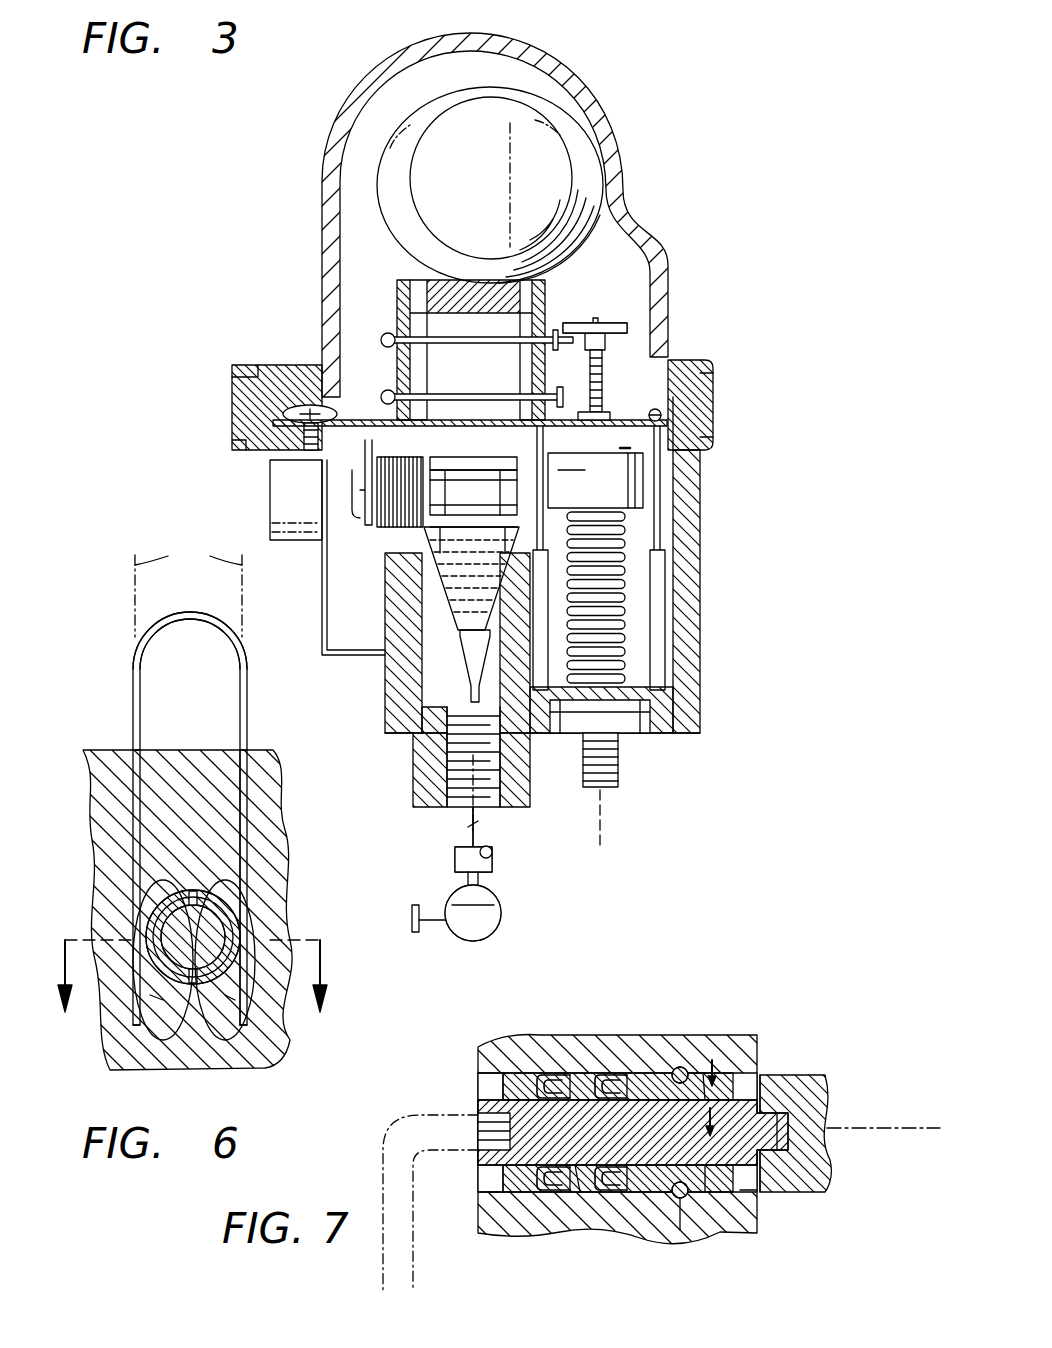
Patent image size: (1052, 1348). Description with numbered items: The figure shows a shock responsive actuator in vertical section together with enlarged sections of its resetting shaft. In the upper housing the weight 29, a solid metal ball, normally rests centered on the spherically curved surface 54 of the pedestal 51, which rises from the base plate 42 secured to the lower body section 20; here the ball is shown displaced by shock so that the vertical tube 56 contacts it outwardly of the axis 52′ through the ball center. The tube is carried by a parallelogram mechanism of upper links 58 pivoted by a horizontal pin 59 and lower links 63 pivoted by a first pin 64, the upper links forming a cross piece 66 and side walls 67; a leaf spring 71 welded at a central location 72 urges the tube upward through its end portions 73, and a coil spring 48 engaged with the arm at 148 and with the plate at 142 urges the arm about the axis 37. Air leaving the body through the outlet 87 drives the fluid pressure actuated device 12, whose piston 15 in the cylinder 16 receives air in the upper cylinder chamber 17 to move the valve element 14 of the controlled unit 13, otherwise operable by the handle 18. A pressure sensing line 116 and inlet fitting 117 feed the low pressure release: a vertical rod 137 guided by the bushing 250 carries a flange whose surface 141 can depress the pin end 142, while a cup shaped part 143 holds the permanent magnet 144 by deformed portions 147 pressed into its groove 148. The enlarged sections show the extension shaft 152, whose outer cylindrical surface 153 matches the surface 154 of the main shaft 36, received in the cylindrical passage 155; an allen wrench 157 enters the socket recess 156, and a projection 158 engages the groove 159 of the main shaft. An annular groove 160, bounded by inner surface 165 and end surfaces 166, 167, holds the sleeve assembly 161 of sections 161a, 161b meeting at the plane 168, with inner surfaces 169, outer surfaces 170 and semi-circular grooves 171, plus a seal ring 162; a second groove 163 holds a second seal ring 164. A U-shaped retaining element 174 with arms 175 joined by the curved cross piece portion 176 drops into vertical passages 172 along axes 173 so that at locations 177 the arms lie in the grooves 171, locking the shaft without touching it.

In FIG. 3, the fluid pressure actuated device 12 is at (496, 880).
In FIG. 3, the controlled unit 13 is at (502, 914).
In FIG. 3, the valve element 14 is at (466, 900).
In FIG. 3, the piston 15 is at (455, 862).
In FIG. 3, the cylinder 16 is at (488, 848).
In FIG. 3, the upper cylinder chamber 17 is at (468, 840).
In FIG. 3, the operating handle 18 is at (416, 932).
In FIG. 6, the lower body section 20 is at (272, 792).
In FIG. 7, the lower body section 20 is at (490, 1237).
In FIG. 3, the weight 29 is at (378, 152).
In FIG. 7, the main shaft 36 is at (822, 1093).
In FIG. 7, the axis 37 is at (895, 1130).
In FIG. 3, the base plate 42 is at (300, 418).
In FIG. 3, the coil spring 48 is at (372, 518).
In FIG. 3, the pedestal 51 is at (425, 292).
In FIG. 3, the vertical axis of the ball 52′ is at (508, 163).
In FIG. 3, the spherically curved surface 54 is at (440, 290).
In FIG. 3, the vertical tube 56 is at (540, 340).
In FIG. 3, the upper links 58 is at (384, 335).
In FIG. 3, the horizontal pin 59 is at (522, 345).
In FIG. 3, the lower links 63 is at (386, 392).
In FIG. 3, the first pin 64 is at (500, 394).
In FIG. 3, the cross piece 66 is at (455, 588).
In FIG. 3, the vertical side walls 67 is at (478, 650).
In FIG. 3, the leaf spring 71 is at (432, 430).
In FIG. 3, the central location 72 is at (463, 430).
In FIG. 3, the end portions 73 is at (400, 477).
In FIG. 3, the outlet 87 is at (492, 772).
In FIG. 3, the line 116 is at (605, 822).
In FIG. 3, the inlet fitting 117 is at (619, 763).
In FIG. 3, the vertical rod 137 is at (602, 380).
In FIG. 3, the downwardly facing horizontal surface 141 is at (627, 327).
In FIG. 3, the end portion of pin 142 is at (352, 440).
In FIG. 3, the cup shaped part 143 is at (628, 492).
In FIG. 3, the permanent magnet 144 is at (642, 447).
In FIG. 3, the localized portions of cup side wall 147 is at (595, 480).
In FIG. 3, the groove in magnet 148 is at (565, 450).
In FIG. 6, the extension shaft 152 is at (207, 905).
In FIG. 7, the extension shaft 152 is at (722, 1040).
In FIG. 7, the outer cylindrical surface 153 is at (515, 1052).
In FIG. 7, the outer cylindrical surface of main shaft 154 is at (795, 1070).
In FIG. 6, the cylindrical passage 155 is at (137, 1030).
In FIG. 7, the cylindrical passage 155 is at (503, 1185).
In FIG. 7, the allen wrench socket recess 156 is at (478, 1115).
In FIG. 7, the allen wrench 157 is at (380, 1160).
In FIG. 7, the diametrically extending projection 158 is at (780, 1112).
In FIG. 7, the diametrical groove 159 is at (778, 1165).
In FIG. 7, the annular groove 160 is at (648, 1073).
In FIG. 7, the sleeve assembly 161 is at (706, 1073).
In FIG. 6, the sleeve section 161a is at (165, 913).
In FIG. 6, the sleeve section 161b is at (238, 880).
In FIG. 7, the seal ring 162 is at (614, 1073).
In FIG. 7, the second groove 163 is at (568, 1073).
In FIG. 7, the second seal ring 164 is at (528, 1073).
In FIG. 6, the inner cylindrical surface 165 is at (160, 1010).
In FIG. 7, the inner cylindrical surface 165 is at (688, 1200).
In FIG. 7, the annular end surface 166 is at (585, 1195).
In FIG. 7, the annular end surface 167 is at (735, 1200).
In FIG. 6, the diametrical plane 168 is at (226, 1010).
In FIG. 6, the inner cylindrical surfaces 169 is at (225, 800).
In FIG. 7, the outer cylindrical surfaces 170 is at (742, 1050).
In FIG. 6, the semi-circular grooves 171 is at (185, 890).
In FIG. 7, the semi-circular grooves 171 is at (682, 1068).
In FIG. 6, the vertical passages 172 is at (250, 772).
In FIG. 7, the vertical passages 172 is at (698, 1070).
In FIG. 6, the vertical axes 173 is at (188, 586).
In FIG. 6, the U-shaped retaining element 174 is at (130, 645).
In FIG. 6, the arms 175 is at (132, 705).
In FIG. 6, the curved cross piece portion 176 is at (218, 625).
In FIG. 6, the locations 177 is at (100, 940).
In FIG. 3, the bushing 250 is at (630, 397).